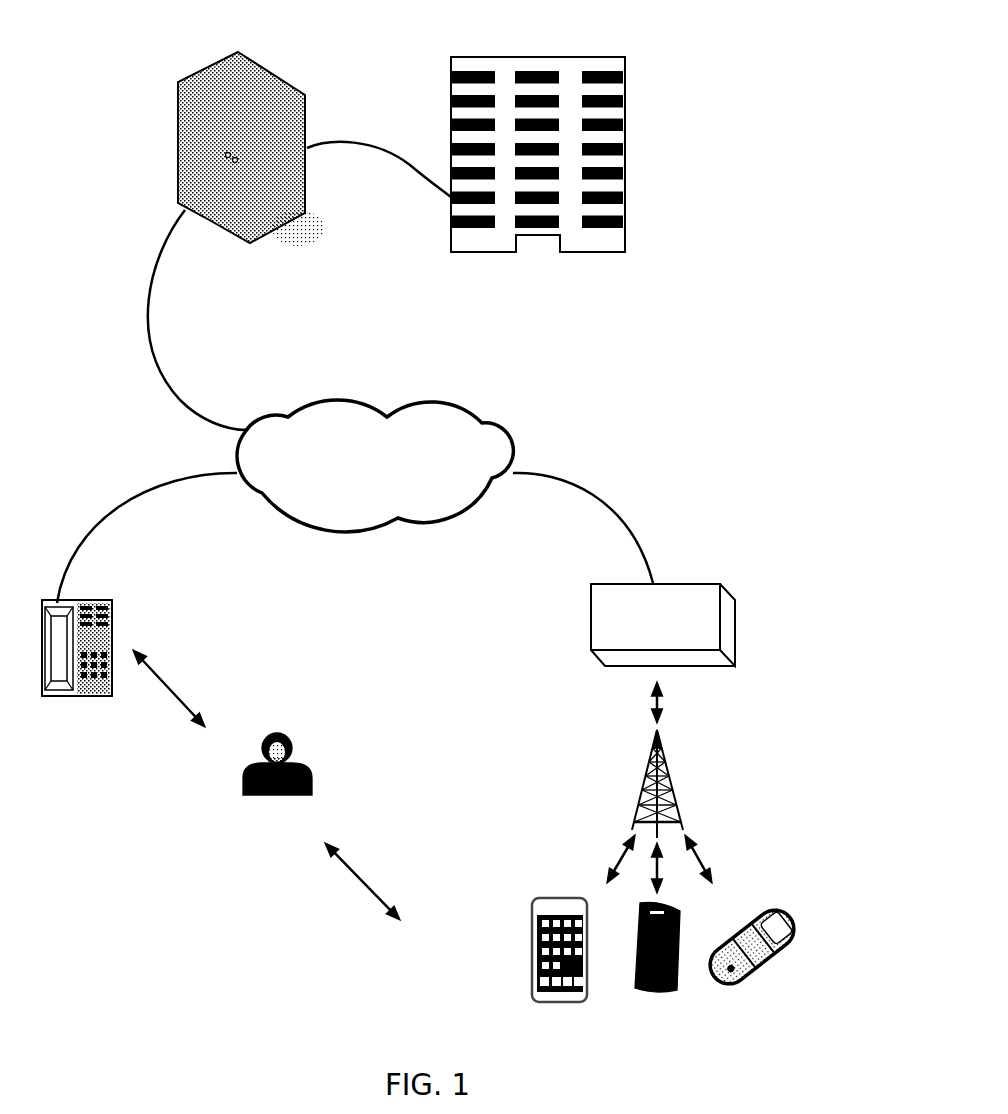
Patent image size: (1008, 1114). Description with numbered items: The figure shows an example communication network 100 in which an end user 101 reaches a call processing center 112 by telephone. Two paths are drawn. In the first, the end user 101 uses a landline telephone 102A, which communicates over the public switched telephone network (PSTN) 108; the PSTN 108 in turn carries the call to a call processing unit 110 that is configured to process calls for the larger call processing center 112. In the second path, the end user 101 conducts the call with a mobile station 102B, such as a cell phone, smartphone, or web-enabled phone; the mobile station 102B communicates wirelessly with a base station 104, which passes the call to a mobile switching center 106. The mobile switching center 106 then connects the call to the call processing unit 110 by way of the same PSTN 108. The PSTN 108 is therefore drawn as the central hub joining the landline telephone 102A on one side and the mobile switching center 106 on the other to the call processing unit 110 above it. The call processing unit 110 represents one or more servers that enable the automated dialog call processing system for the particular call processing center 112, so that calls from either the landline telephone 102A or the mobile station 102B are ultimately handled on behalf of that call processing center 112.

The communication network 100 is at (752, 34).
The end user 101 is at (275, 796).
The landline telephone 102A is at (110, 603).
The mobile station 102B is at (532, 918).
The cellular tower 104 is at (662, 750).
The mobile switching center 106 is at (663, 625).
The public switched telephone network (PSTN) 108 is at (375, 466).
The call processing unit 110 is at (243, 209).
The call processing center 112 is at (538, 222).